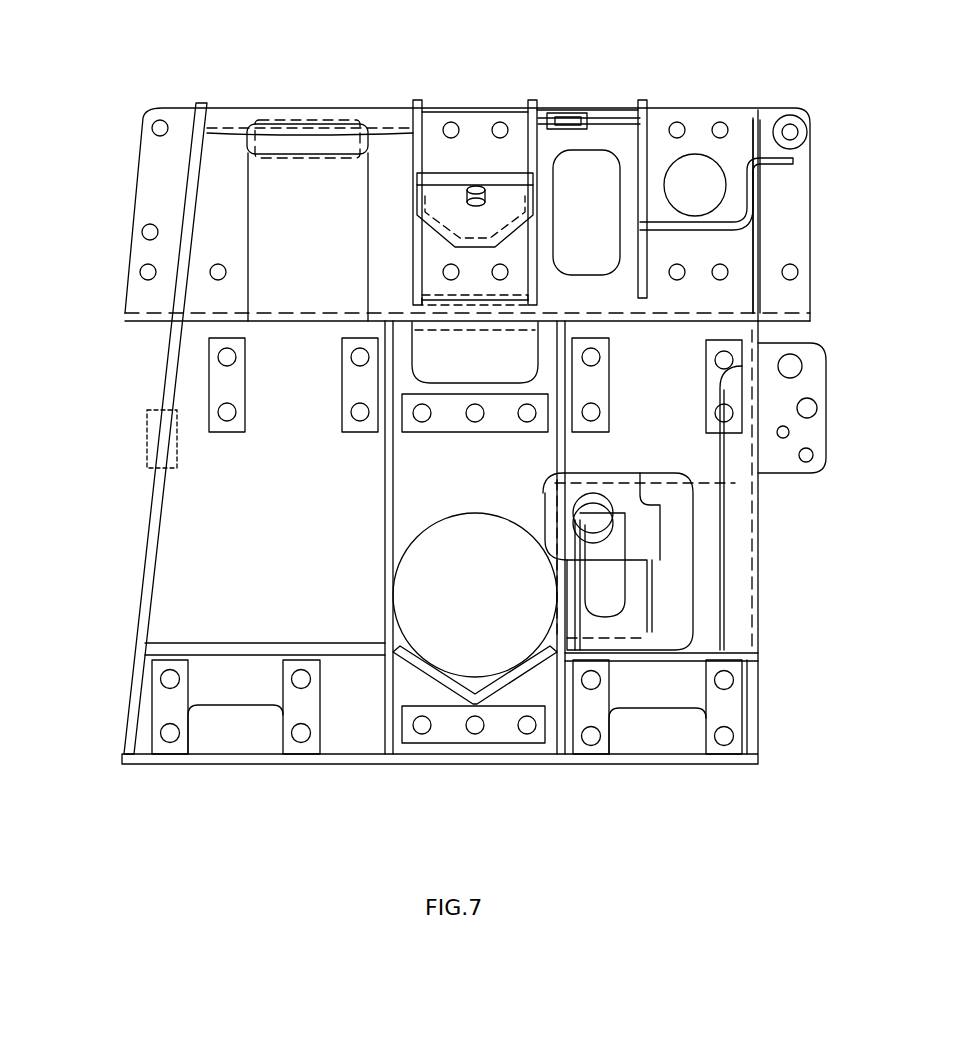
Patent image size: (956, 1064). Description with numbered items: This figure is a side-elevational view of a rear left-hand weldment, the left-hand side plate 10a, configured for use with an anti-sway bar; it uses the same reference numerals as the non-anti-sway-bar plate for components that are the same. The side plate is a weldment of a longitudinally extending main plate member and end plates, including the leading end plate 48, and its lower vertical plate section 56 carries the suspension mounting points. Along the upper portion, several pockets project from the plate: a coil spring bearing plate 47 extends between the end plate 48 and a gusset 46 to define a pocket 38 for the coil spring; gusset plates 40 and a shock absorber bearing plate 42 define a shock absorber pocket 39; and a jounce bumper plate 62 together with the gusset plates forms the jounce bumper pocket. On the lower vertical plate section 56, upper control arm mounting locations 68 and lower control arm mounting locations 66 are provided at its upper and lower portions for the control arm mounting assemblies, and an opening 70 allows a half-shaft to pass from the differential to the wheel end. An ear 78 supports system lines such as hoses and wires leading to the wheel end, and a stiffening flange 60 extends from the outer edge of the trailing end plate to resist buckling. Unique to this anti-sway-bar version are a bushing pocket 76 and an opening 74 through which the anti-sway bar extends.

The left-hand side plate 10a is at (150, 376).
The pocket 38 is at (604, 131).
The shock absorber pocket 39 is at (270, 181).
The gusset plates 40 is at (650, 131).
The shock absorber bearing plate 42 is at (546, 120).
The gusset plate 46 is at (420, 124).
The coil spring bearing plate 47 is at (268, 124).
The leading end plate 48 is at (155, 490).
The lower vertical plate section 56 is at (680, 463).
The stiffening flange 60 is at (738, 612).
The jounce bumper plate 62 is at (486, 177).
The lower control arm attachment locations 66 is at (232, 698).
The upper control arm attachment locations 68 is at (272, 360).
The opening 70 is at (432, 632).
The opening 74 is at (690, 170).
The bushing pocket 76 is at (732, 210).
The ear 78 is at (808, 378).